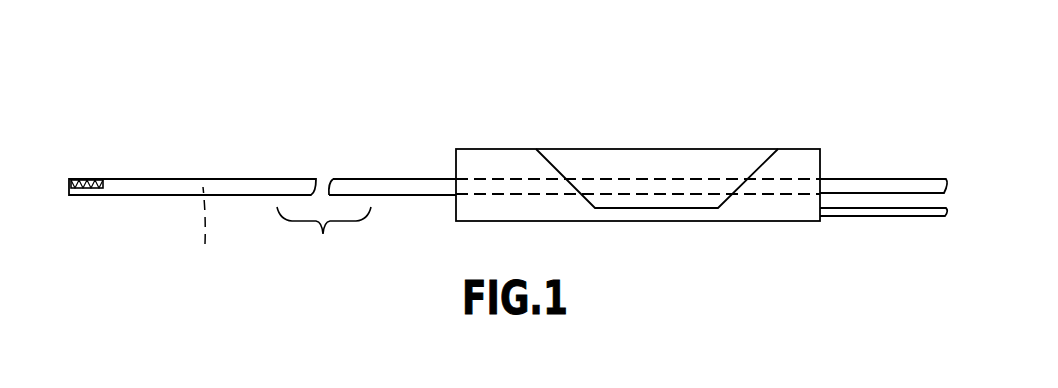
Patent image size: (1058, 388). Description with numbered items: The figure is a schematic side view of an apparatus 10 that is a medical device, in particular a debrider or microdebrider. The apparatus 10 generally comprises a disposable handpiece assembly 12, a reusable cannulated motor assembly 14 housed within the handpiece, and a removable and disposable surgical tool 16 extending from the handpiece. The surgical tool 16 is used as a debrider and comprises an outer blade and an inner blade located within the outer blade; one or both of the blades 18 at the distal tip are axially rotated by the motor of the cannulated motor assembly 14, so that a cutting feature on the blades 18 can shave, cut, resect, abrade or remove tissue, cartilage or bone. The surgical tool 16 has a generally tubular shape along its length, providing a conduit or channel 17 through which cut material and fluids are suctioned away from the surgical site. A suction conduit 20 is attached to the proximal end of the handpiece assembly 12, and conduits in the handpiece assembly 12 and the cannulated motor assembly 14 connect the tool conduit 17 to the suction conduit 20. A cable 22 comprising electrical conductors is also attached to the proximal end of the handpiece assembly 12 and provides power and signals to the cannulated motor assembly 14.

The apparatus 10 is at (245, 148).
The disposable handpiece assembly 12 is at (491, 149).
The reusable cannulated motor assembly 14 is at (642, 149).
The surgical tool 16 is at (127, 196).
The conduit or channel 17 is at (192, 235).
The blades 18 is at (80, 178).
The suction conduit 20 is at (895, 178).
The cable 22 is at (887, 218).